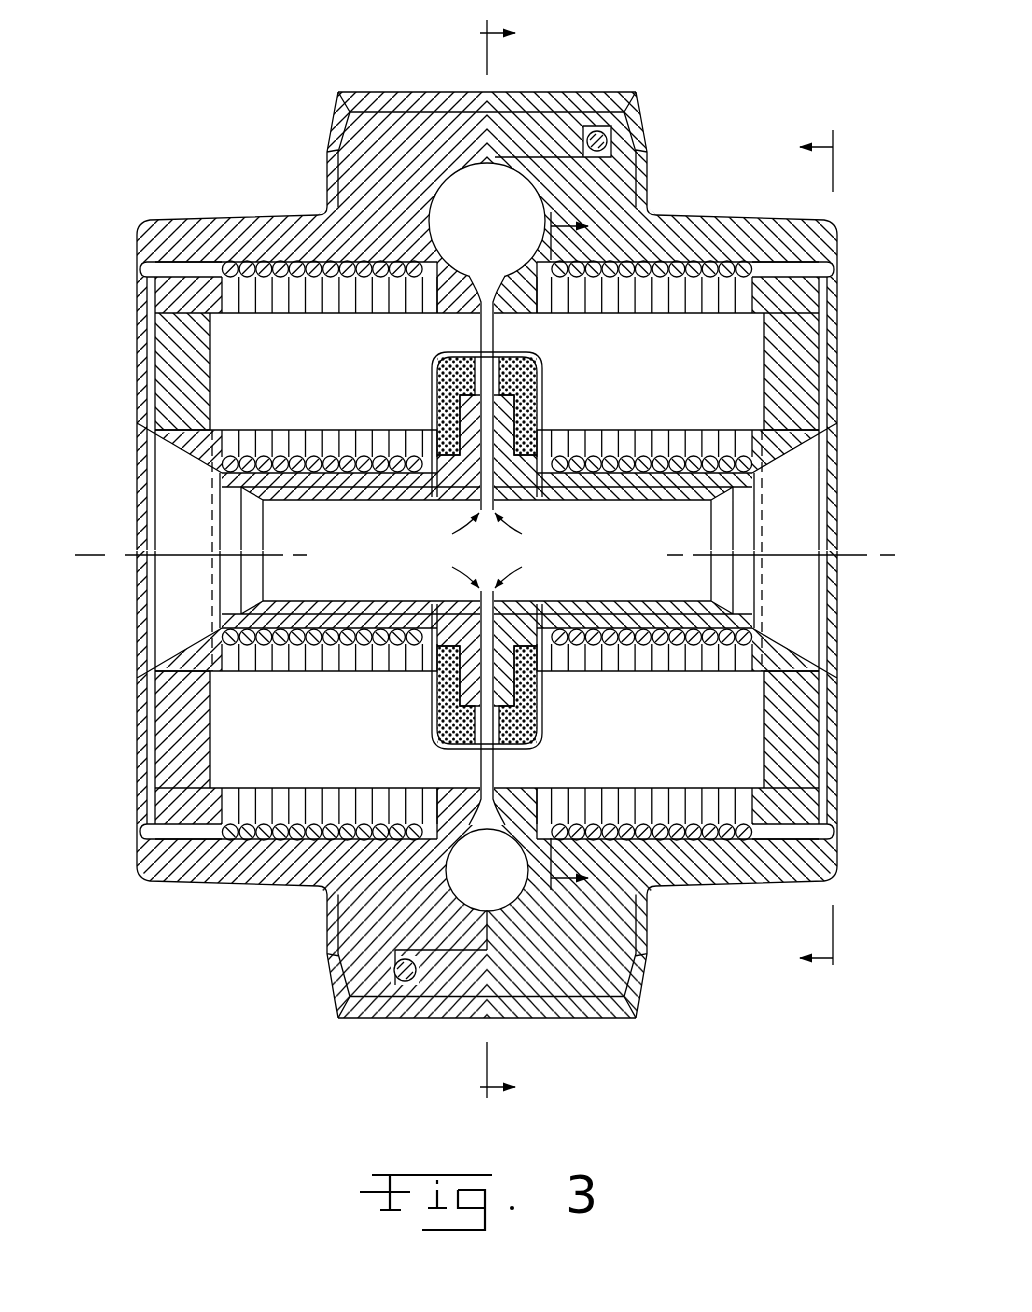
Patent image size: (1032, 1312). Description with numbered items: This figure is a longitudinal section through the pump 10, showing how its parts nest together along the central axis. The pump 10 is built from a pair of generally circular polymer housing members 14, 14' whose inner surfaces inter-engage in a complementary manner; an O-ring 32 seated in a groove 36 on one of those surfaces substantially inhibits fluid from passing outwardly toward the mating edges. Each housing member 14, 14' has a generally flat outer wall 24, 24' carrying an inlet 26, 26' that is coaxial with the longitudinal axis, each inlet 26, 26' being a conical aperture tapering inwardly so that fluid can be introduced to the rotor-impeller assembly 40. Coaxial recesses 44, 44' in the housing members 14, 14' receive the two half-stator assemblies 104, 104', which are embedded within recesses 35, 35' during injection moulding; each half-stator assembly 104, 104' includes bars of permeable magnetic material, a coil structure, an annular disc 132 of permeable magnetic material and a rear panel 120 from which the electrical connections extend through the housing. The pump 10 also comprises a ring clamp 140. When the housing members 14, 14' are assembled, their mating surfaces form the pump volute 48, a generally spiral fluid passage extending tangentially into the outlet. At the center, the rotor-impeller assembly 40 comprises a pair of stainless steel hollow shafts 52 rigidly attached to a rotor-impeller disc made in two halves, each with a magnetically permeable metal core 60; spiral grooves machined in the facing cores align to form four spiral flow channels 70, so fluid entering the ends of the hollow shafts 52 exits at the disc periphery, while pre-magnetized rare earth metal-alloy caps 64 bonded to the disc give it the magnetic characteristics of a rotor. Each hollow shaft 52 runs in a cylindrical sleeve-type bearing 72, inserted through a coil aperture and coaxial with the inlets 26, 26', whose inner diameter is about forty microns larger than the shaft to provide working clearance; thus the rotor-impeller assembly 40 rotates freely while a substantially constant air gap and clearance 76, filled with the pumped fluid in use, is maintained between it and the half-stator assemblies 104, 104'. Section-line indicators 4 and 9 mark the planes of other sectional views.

The section line 4- 4 is at (517, 561).
The section line 9- 9 is at (582, 553).
The pump 10 is at (797, 552).
The housing member 14 is at (692, 282).
The housing member 14' is at (288, 282).
The outer wall 24 is at (867, 550).
The outer wall 24' is at (108, 550).
The inlet 26 is at (826, 550).
The inlet 26' is at (146, 550).
The O-ring 32 is at (603, 128).
The recess 35 is at (685, 244).
The recess 35' is at (288, 232).
The groove 36 is at (607, 160).
The rotor-impeller assembly 40 is at (557, 546).
The recess 44 is at (491, 539).
The recess 44' is at (418, 676).
The pump volute 48 is at (470, 236).
The hollow shaft 52 is at (726, 535).
The core 60 is at (446, 400).
The cap 64 is at (546, 373).
The spiral flow channel 70 is at (492, 366).
The bearing 72 is at (318, 456).
The air gap and clearance 76 is at (760, 483).
The half-stator assembly 104 is at (828, 371).
The half-stator assembly 104' is at (144, 371).
The rear panel 120 is at (150, 795).
The annular disc 132 is at (175, 705).
The ring clamp 140 is at (385, 97).